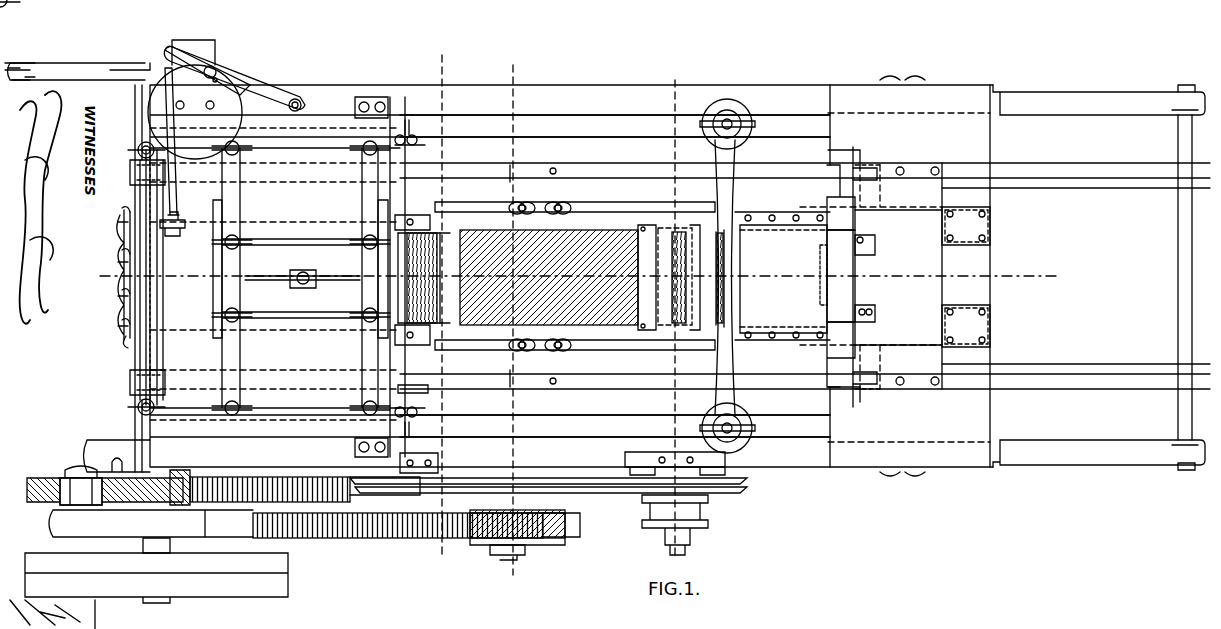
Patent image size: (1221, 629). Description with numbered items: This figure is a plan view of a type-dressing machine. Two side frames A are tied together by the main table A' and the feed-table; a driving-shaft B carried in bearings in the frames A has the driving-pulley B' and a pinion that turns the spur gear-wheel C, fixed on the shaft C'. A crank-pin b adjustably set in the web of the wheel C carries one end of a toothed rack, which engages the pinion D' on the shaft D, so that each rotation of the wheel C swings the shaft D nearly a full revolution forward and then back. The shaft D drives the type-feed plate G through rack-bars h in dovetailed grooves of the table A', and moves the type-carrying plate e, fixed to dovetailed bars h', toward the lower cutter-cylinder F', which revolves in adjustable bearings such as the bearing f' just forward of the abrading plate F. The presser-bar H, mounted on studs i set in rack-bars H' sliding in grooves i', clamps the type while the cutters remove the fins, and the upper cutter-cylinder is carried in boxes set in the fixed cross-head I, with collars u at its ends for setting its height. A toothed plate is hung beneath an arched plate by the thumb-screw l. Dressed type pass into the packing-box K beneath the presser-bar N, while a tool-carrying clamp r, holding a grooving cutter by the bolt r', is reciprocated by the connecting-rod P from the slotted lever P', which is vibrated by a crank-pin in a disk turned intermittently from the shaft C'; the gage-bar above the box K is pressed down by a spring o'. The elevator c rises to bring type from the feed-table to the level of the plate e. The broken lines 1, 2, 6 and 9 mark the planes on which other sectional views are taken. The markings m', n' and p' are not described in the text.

The side frame A is at (1099, 277).
The main table A' is at (539, 278).
The driving-shaft B is at (156, 545).
The driving-pulley B' is at (156, 578).
The spur gear-wheel C is at (216, 485).
The shaft C' is at (108, 487).
The shaft D is at (516, 556).
The pinion D' is at (528, 530).
The abrading plate F is at (549, 294).
The cutter-cylinder F' is at (683, 277).
The type-feed plate G is at (871, 277).
The presser-bar H is at (732, 277).
The toothed rack-bar H' is at (615, 276).
The fixed cross-head I is at (380, 277).
The packing-box K is at (90, 285).
The vertically-movable presser-bar N is at (152, 282).
The connecting-rod P is at (177, 141).
The slotted lever P' is at (234, 78).
The crank-pin b is at (81, 485).
The elevator c is at (837, 276).
The screw c' is at (867, 278).
The type-carrying plate e is at (782, 276).
The bearing f' is at (675, 463).
The toothed rack-bar h is at (805, 274).
The dovetailed bar h' is at (575, 275).
The vertical stud i is at (727, 277).
The dovetailed groove i' is at (195, 207).
The shaft k' is at (416, 276).
The thumb-screw l is at (303, 272).
The pin m' is at (119, 325).
The pin n' is at (119, 278).
The spring o' is at (882, 277).
The pin p' is at (118, 345).
The tool-carrying clamp r is at (176, 224).
The bolt r' is at (124, 221).
The collar u is at (426, 277).
The section line 1 is at (587, 276).
The section line 2 is at (513, 320).
The section line 6 is at (675, 317).
The section line 9 is at (442, 305).